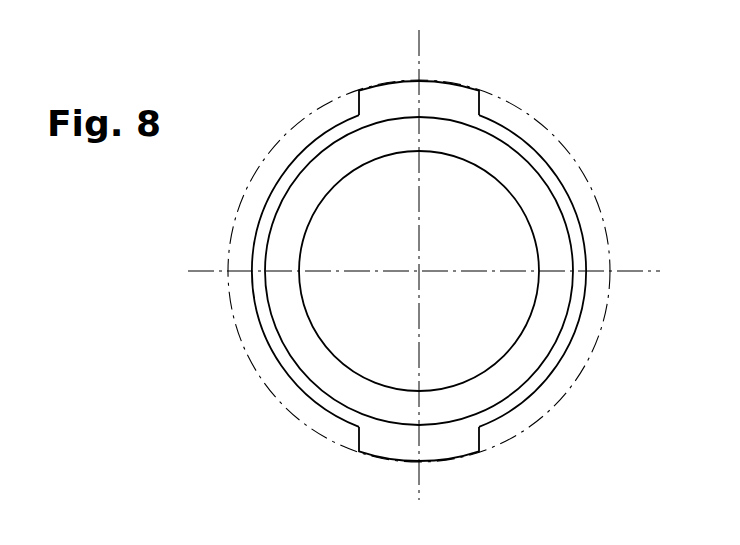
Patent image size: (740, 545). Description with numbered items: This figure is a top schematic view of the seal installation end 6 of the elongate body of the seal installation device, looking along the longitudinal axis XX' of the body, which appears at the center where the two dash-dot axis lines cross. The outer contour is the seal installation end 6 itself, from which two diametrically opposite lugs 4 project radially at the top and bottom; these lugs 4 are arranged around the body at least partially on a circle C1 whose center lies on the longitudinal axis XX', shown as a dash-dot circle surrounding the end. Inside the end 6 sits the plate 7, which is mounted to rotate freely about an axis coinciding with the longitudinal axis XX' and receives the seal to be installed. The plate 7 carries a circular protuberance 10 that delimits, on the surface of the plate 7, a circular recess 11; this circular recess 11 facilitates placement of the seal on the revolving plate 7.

The lug 4 is at (453, 82).
The circle C1 is at (533, 117).
The longitudinal axis XX' is at (424, 265).
The seal installation end 6 is at (532, 397).
The plate 7 is at (552, 348).
The circular protuberance 10 is at (538, 285).
The circular recess 11 is at (380, 338).